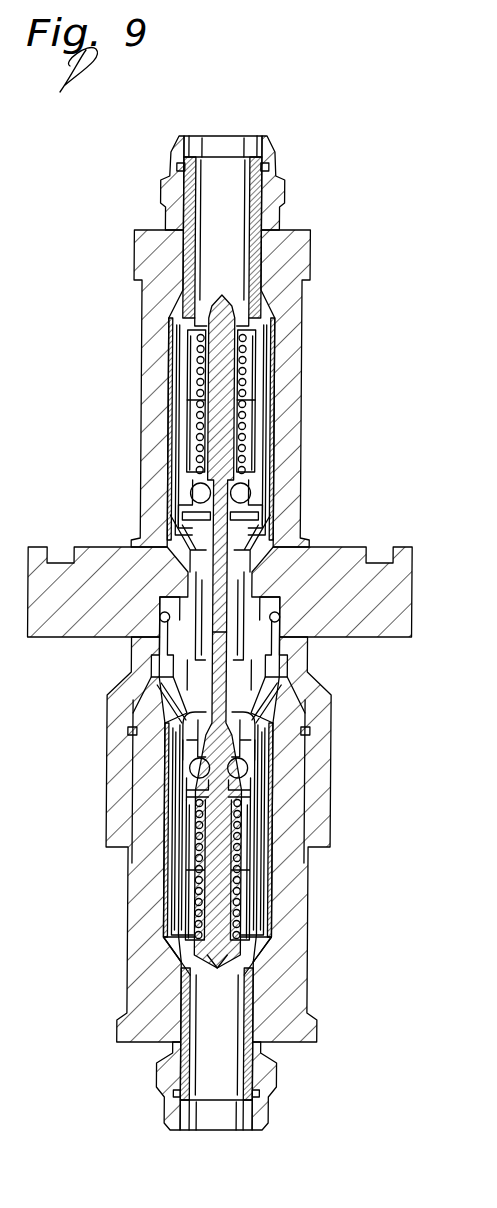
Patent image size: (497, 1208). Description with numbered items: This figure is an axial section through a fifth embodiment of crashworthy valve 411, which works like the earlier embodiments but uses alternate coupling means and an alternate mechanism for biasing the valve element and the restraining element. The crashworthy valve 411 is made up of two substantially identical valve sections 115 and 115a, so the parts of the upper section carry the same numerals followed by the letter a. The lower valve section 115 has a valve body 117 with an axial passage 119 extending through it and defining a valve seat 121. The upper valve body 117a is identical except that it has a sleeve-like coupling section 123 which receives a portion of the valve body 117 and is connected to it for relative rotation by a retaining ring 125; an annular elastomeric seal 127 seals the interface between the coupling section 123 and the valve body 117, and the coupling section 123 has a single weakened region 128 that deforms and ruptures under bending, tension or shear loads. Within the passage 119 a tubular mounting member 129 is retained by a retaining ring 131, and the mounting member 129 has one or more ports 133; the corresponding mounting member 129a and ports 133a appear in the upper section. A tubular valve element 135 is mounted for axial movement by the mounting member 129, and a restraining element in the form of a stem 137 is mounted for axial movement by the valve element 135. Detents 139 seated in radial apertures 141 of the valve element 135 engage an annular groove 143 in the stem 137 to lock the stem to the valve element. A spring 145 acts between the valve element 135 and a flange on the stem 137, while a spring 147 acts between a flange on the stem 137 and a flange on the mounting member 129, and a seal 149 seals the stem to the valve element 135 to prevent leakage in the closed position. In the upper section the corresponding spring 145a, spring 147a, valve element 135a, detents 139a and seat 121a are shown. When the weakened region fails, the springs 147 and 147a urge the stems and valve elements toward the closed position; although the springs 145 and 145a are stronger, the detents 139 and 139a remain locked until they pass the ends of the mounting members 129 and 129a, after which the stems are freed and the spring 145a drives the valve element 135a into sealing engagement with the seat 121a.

The crashworthy valve 411 is at (225, 621).
The mounting member 129a is at (268, 230).
The port 133a is at (232, 312).
The spring 147a is at (294, 293).
The valve body 117a is at (293, 345).
The valve section 115a is at (134, 411).
The spring 145a is at (252, 424).
The valve element 135a is at (195, 515).
The detent 139a is at (256, 485).
The valve seat 121a is at (271, 530).
The annular elastomeric seal 127 is at (134, 650).
The weakened region 128 is at (320, 647).
The valve seat 121 is at (308, 675).
The retaining ring 125 is at (134, 731).
The seal 149 is at (308, 703).
The coupling section 123 is at (122, 748).
The valve element 135 is at (264, 712).
The detent 139 is at (193, 763).
The radial aperture 141 is at (196, 783).
The annular groove 143 is at (259, 792).
The valve section 115 is at (112, 885).
The spring 145 is at (265, 853).
The valve body 117 is at (140, 891).
The spring 147 is at (260, 921).
The axial passage 119 is at (177, 931).
The stem 137 is at (228, 948).
The port 133 is at (137, 978).
The mounting member 129 is at (179, 1062).
The retaining ring 131 is at (268, 1097).